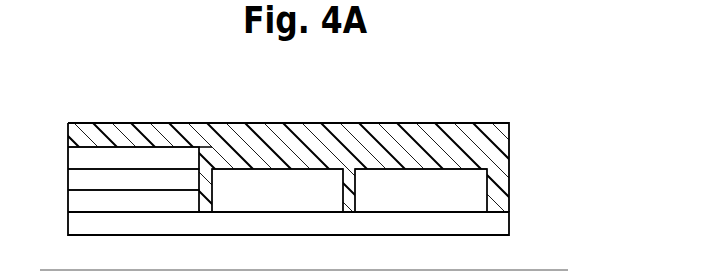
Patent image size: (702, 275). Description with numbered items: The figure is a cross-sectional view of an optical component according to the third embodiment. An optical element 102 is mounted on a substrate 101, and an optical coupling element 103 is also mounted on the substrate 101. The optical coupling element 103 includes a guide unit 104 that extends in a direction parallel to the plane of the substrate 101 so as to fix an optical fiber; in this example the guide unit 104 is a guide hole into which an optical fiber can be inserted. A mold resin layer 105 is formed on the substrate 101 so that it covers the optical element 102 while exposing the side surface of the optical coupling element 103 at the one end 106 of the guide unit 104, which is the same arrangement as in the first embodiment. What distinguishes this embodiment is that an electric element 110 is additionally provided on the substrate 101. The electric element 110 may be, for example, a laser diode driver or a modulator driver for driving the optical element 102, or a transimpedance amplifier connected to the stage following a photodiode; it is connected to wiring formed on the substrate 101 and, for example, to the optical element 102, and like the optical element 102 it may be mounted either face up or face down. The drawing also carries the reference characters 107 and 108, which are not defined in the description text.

The substrate 101 is at (509, 222).
The optical element 102 is at (278, 175).
The optical coupling element 103 is at (102, 150).
The guide unit 104 is at (160, 175).
The mold resin layer 105 is at (509, 157).
The one end of the guide unit 106 is at (67, 180).
The side wall portion 107 is at (204, 185).
The contact portion 108 is at (206, 205).
The electric element 110 is at (413, 175).